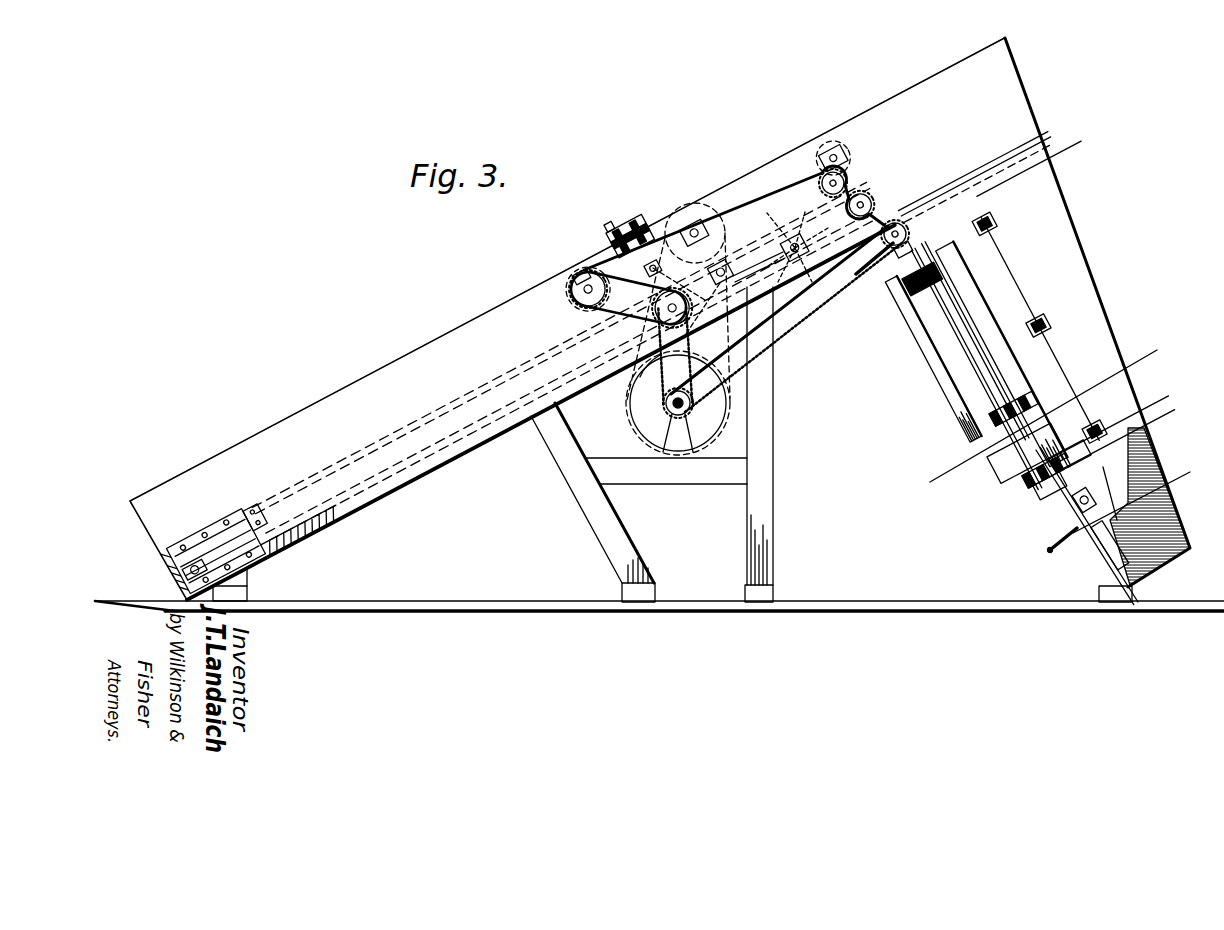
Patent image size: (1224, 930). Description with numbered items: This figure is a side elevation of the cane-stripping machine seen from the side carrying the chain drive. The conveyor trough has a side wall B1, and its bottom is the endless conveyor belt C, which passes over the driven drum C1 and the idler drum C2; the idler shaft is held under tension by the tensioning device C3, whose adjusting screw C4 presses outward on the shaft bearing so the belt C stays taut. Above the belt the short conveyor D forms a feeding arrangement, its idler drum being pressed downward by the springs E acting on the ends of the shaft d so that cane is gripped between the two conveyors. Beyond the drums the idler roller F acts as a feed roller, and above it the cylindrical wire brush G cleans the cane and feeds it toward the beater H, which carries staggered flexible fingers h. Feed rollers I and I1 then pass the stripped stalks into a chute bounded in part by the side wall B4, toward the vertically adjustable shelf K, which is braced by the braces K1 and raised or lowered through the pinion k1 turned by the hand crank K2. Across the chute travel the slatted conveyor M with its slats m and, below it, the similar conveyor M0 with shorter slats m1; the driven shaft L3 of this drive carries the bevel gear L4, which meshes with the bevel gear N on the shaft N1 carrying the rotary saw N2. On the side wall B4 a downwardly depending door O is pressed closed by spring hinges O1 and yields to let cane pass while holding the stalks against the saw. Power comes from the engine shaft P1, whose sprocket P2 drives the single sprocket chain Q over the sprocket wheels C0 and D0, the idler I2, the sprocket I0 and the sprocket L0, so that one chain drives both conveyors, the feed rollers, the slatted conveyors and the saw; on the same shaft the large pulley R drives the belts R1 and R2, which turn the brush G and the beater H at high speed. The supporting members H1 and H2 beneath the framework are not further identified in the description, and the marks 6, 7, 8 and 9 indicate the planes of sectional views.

The side wall of conveyor trough B1 is at (366, 376).
The side wall of chute B4 is at (1080, 257).
The endless conveyor belt C is at (405, 487).
The sprocket wheel C0 is at (654, 312).
The driven drum C1 is at (219, 545).
The idler drum C2 is at (194, 565).
The tensioning device C3 is at (289, 540).
The adjusting screw C4 is at (259, 514).
The short conveyor D is at (570, 281).
The sprocket wheel D0 is at (580, 300).
The springs E is at (634, 222).
The idler roller F is at (713, 286).
The brush G is at (698, 202).
The shaft d is at (664, 270).
The staggered fingers h is at (783, 240).
The beater H is at (874, 613).
The footing blocks H1 is at (249, 582).
The supporting posts H2 is at (593, 517).
The feed roller I is at (848, 152).
The sprocket I0 is at (880, 196).
The feed roller I1 is at (866, 180).
The idler I2 is at (810, 188).
The shelf K is at (1090, 468).
The braces K1 is at (1102, 476).
The pinion k1 is at (1120, 504).
The hand crank K2 is at (1048, 551).
The sprocket L0 is at (896, 222).
The driven shaft L3 is at (906, 248).
The bevel gear L4 is at (888, 262).
The slatted conveyor M is at (975, 320).
The lower conveyor M0 is at (1000, 510).
The slats m is at (965, 305).
The shorter slats m1 is at (1012, 480).
The bevel gear N is at (910, 245).
The shaft N1 is at (966, 356).
The rotary saw N2 is at (994, 460).
The door O is at (1057, 357).
The spring hinges O1 is at (986, 232).
The shaft P1 is at (700, 430).
The sprocket P2 is at (692, 406).
The sprocket chain Q is at (700, 338).
The large pulley R is at (712, 450).
The belt R1 is at (775, 372).
The belt R2 is at (810, 330).
The section line 6- 6 is at (1070, 113).
The section line 7- 7 is at (1147, 323).
The section line 8- 8 is at (1180, 443).
The section line 9- 9 is at (833, 147).